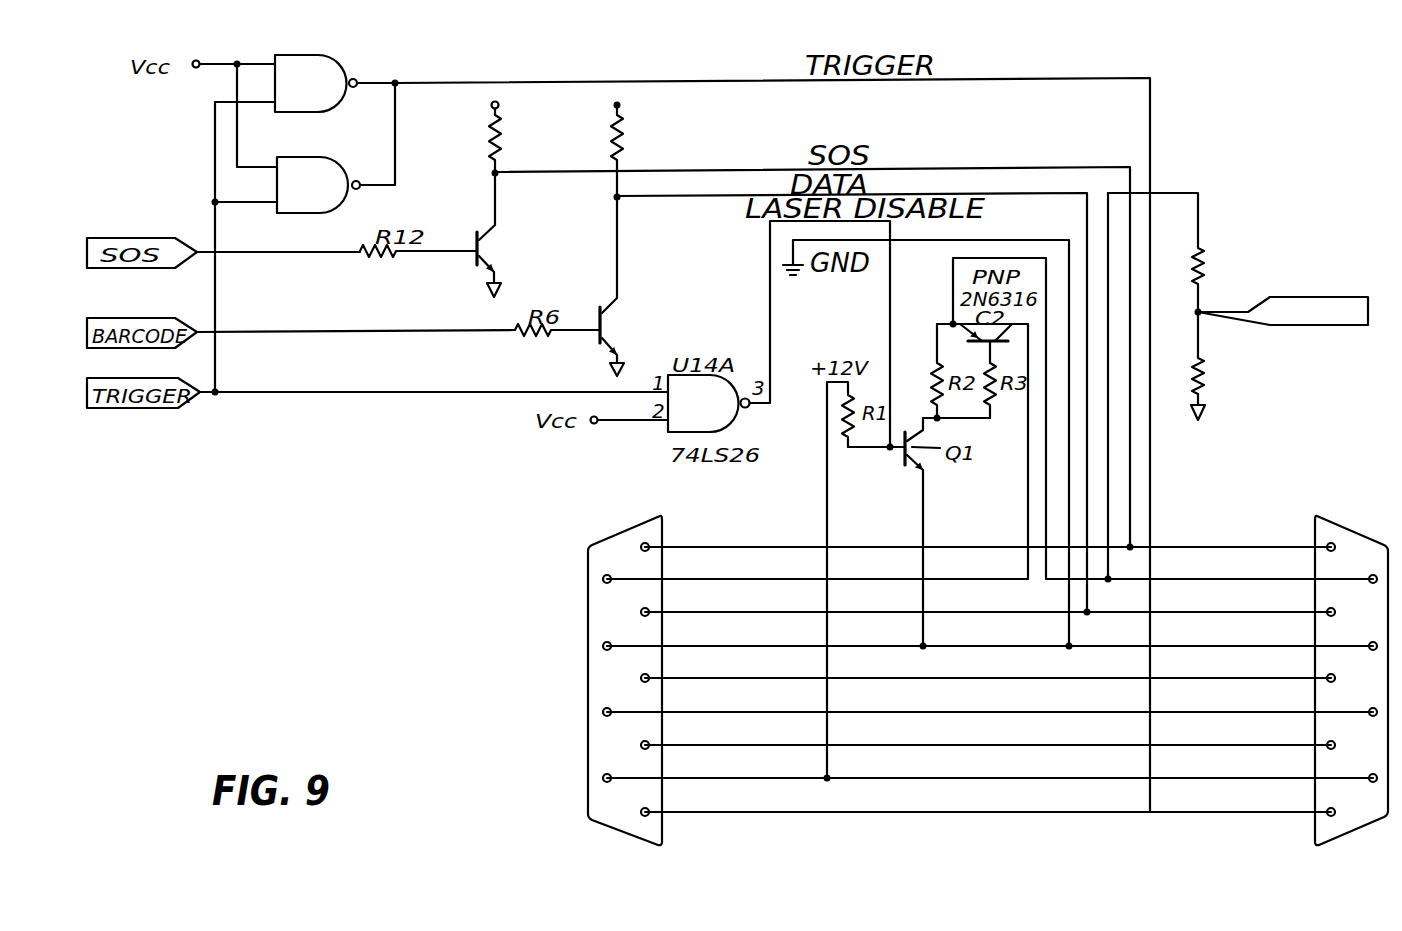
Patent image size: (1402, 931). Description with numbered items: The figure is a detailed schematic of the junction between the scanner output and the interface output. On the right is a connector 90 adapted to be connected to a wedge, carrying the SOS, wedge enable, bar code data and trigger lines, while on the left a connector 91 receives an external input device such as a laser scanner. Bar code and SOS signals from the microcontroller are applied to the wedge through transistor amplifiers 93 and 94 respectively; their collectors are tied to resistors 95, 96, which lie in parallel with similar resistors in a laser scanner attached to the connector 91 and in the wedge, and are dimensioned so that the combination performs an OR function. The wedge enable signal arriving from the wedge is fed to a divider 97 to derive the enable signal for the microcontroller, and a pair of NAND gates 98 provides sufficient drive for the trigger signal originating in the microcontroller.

The connector 90 is at (1350, 838).
The connector 91 is at (615, 826).
The transistor amplifier 93 is at (480, 213).
The transistor amplifier 94 is at (658, 318).
The resistor 95 is at (490, 139).
The resistor 96 is at (615, 141).
The divider 97 is at (1195, 282).
The pair of NAND gates 98 is at (390, 115).